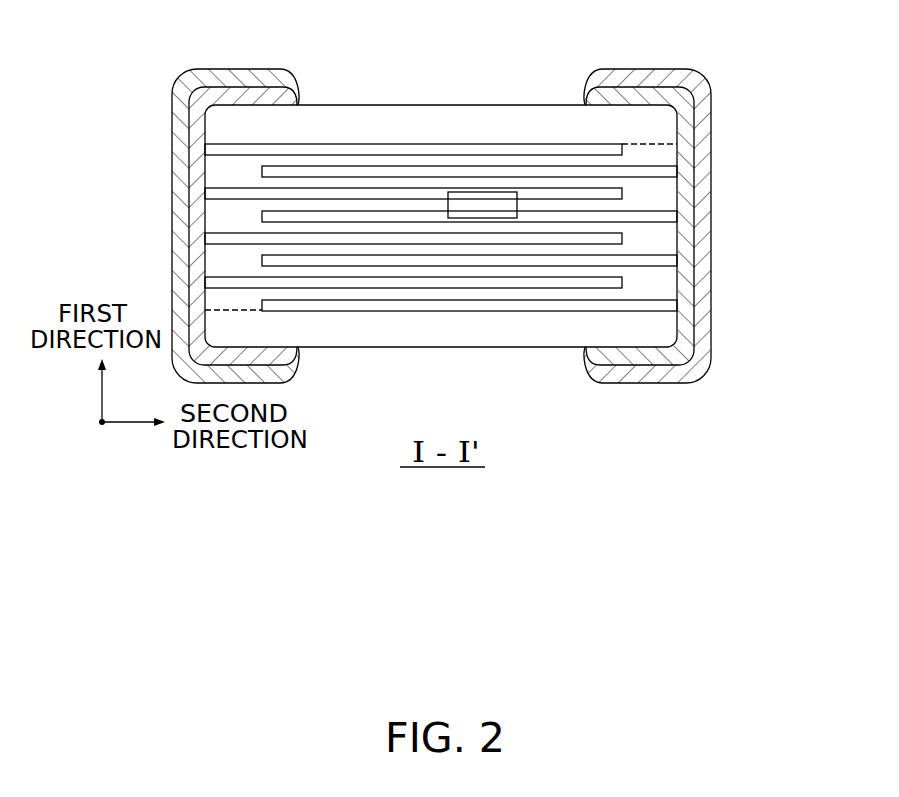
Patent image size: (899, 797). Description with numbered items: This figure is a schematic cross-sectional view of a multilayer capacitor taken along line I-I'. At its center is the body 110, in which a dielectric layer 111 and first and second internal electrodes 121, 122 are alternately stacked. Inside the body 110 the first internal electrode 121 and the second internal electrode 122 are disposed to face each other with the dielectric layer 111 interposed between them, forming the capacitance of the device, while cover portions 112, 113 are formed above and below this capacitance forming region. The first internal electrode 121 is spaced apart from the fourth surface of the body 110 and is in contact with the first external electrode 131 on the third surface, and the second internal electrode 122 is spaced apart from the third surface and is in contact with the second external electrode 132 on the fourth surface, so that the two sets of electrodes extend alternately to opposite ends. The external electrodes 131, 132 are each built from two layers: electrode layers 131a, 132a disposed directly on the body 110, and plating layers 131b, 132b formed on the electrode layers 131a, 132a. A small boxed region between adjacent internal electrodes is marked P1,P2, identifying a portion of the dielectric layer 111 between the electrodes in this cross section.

The body 110 is at (377, 106).
The dielectric layer 111 is at (323, 178).
The cover portion 112 is at (448, 120).
The cover portion 113 is at (357, 330).
The first internal electrode 121 is at (512, 146).
The second internal electrode 122 is at (570, 170).
The first external electrode 131 is at (162, 226).
The electrode layer 131a is at (198, 160).
The plating layer 131b is at (178, 184).
The second external electrode 132 is at (722, 226).
The electrode layer 132a is at (683, 133).
The plating layer 132b is at (707, 157).
The measurement regions of dielectric layer P1,P2 is at (463, 218).